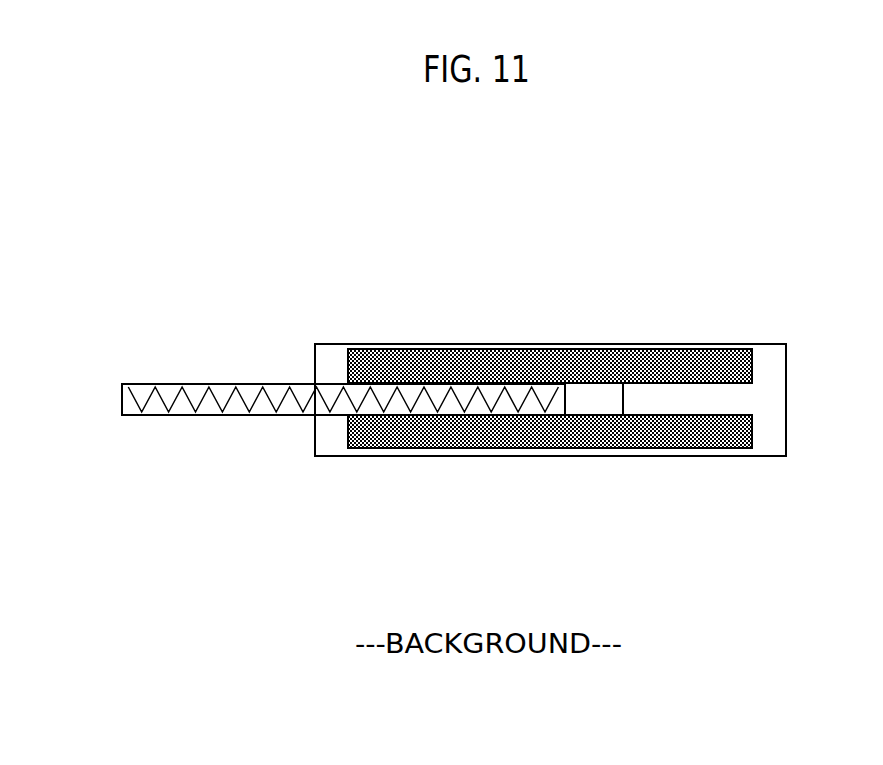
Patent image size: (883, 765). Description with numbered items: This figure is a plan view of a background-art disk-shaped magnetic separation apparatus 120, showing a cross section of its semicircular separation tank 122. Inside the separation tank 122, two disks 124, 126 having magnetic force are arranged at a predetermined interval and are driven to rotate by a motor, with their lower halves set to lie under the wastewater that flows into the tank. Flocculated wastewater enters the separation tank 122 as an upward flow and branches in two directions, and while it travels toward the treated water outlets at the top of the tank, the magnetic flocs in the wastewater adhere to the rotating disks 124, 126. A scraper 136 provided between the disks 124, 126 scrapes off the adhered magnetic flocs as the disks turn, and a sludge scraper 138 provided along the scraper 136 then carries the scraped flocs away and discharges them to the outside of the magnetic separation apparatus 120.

The magnetic separation apparatus 120 is at (768, 303).
The separation tank 122 is at (670, 344).
The disk 124 is at (688, 440).
The disk 126 is at (496, 356).
The scraper 136 is at (238, 416).
The sludge scraper 138 is at (190, 387).